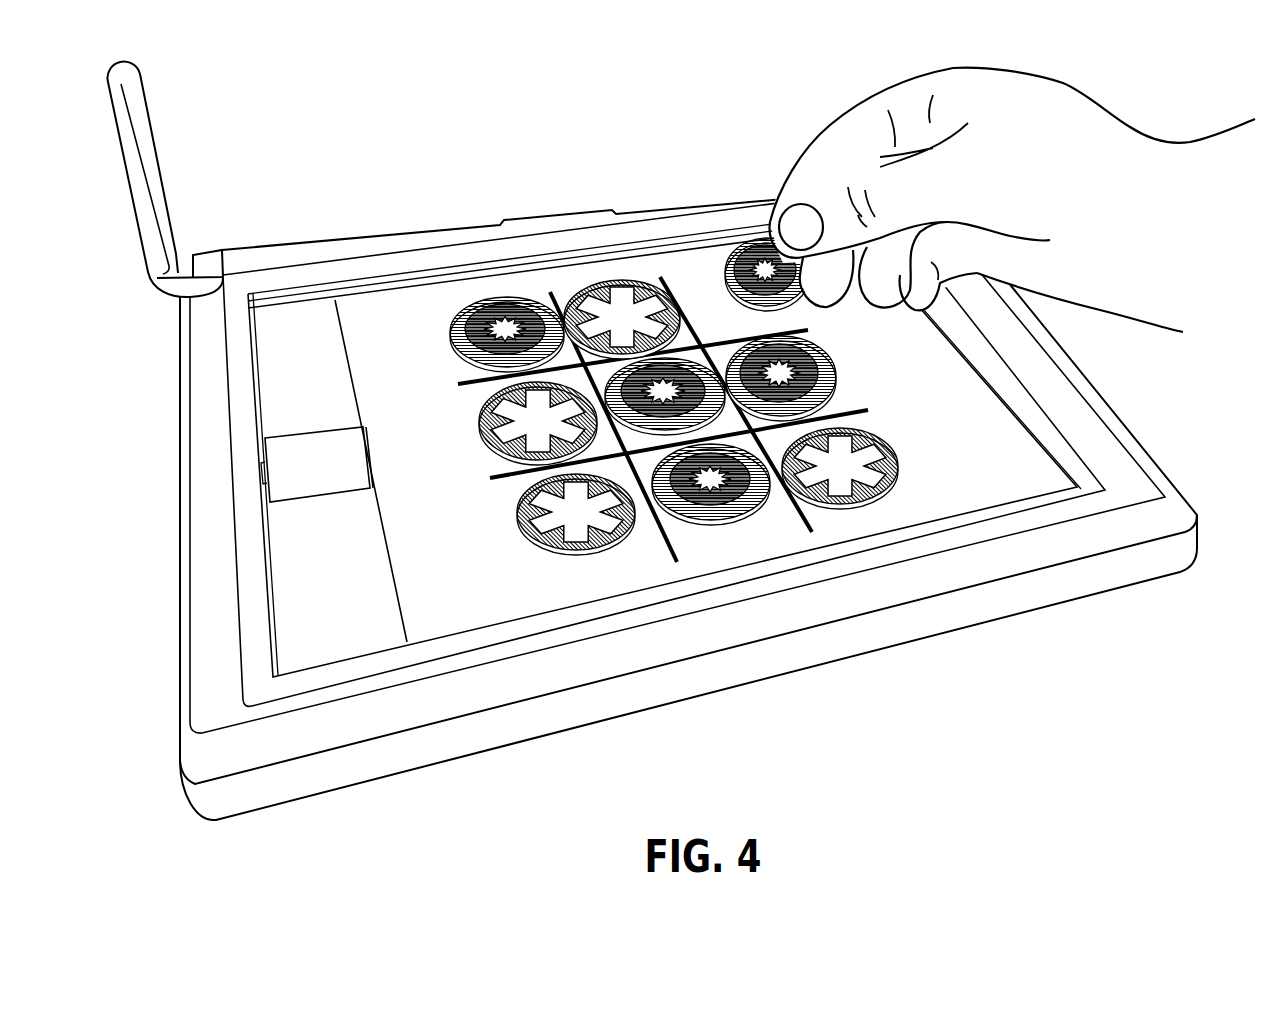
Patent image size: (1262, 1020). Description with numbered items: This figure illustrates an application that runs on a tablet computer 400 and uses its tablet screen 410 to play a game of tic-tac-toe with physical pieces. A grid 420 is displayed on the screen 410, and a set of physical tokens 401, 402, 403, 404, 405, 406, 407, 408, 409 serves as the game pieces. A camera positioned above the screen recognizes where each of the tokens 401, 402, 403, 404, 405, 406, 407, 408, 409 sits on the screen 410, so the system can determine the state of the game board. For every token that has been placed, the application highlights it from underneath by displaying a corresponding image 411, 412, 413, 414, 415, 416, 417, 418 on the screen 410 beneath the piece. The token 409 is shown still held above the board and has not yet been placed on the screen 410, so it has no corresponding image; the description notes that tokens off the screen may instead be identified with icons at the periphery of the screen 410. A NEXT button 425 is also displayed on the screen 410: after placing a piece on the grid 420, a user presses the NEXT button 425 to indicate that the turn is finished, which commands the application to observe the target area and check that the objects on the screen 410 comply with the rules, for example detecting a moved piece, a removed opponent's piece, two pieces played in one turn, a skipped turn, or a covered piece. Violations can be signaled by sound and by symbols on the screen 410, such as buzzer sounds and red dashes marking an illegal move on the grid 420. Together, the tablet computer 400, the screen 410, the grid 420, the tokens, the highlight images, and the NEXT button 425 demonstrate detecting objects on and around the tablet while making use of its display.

The tablet computer 400 is at (1188, 550).
The physical token 401 is at (520, 298).
The physical token 402 is at (630, 280).
The physical token 403 is at (917, 509).
The physical token 404 is at (706, 352).
The physical token 405 is at (480, 408).
The physical token 406 is at (566, 639).
The physical token 407 is at (687, 500).
The physical token 408 is at (840, 519).
The physical token 409 is at (748, 242).
The tablet screen 410 is at (455, 300).
The image 411 is at (481, 290).
The image 412 is at (570, 288).
The image 413 is at (875, 422).
The image 414 is at (556, 466).
The image 415 is at (377, 490).
The image 416 is at (539, 643).
The image 417 is at (757, 503).
The image 418 is at (903, 457).
The grid 420 is at (812, 530).
The NEXT button 425 is at (277, 440).